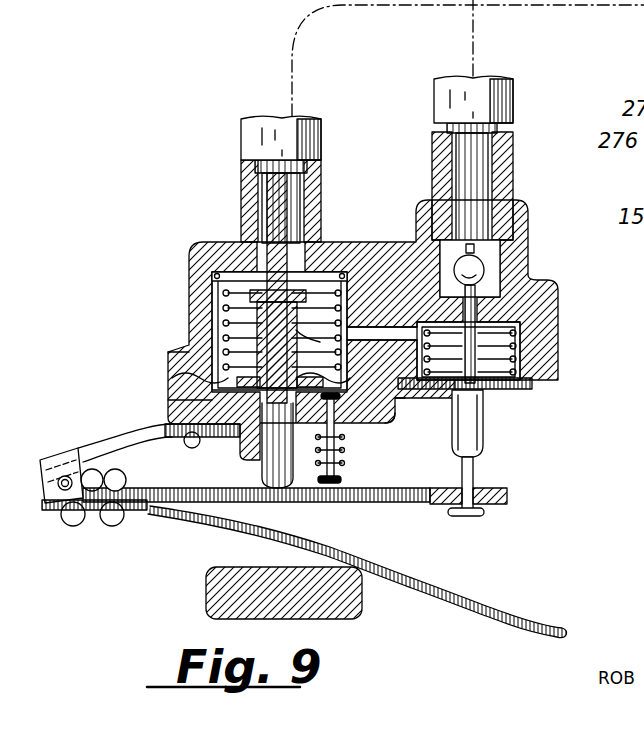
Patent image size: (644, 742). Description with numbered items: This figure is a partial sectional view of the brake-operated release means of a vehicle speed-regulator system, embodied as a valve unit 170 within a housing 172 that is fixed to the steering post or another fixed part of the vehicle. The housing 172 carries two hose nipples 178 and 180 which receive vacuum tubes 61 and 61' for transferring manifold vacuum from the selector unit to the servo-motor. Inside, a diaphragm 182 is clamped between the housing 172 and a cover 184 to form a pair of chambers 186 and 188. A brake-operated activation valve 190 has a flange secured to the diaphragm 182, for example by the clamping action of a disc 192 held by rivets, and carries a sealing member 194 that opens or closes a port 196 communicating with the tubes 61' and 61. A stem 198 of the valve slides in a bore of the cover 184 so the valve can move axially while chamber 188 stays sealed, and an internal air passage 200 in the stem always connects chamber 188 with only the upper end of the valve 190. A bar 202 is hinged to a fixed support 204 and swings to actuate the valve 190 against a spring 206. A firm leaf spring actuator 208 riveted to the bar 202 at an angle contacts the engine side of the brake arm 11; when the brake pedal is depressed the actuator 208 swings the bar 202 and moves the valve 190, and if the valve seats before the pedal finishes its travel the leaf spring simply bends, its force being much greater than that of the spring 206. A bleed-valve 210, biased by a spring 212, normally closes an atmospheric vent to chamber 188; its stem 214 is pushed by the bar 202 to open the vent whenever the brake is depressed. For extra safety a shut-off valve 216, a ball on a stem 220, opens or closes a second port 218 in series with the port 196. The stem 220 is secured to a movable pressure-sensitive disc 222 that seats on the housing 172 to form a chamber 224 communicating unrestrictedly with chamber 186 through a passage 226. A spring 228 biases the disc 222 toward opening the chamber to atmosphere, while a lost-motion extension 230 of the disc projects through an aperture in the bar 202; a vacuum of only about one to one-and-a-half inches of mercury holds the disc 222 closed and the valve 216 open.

The arm 11 is at (240, 578).
The tube 61 is at (252, 134).
The tube 61' is at (502, 97).
The valve unit 170 is at (532, 392).
The housing 172 is at (520, 282).
The hose nipple 178 is at (300, 222).
The hose nipple 180 is at (445, 165).
The diaphragm 182 is at (200, 376).
The cover 184 is at (175, 430).
The chamber 186 is at (332, 272).
The chamber 188 is at (397, 399).
The brake-operated activation valve 190 is at (250, 298).
The disc 192 is at (195, 405).
The sealing member 194 is at (215, 276).
The port 196 is at (310, 258).
The stem 198 is at (270, 477).
The internal air passage 200 is at (323, 346).
The bar 202 is at (398, 500).
The fixed support 204 is at (97, 442).
The spring 206 is at (230, 330).
The leaf spring actuator 208 is at (520, 612).
The bleed-valve 210 is at (392, 419).
The spring 212 is at (342, 455).
The stem 214 is at (318, 492).
The safety shut-off valve 216 is at (485, 262).
The second port 218 is at (490, 308).
The stem 220 is at (484, 410).
The movable disc 222 is at (535, 386).
The chamber 224 is at (520, 337).
The passage 226 is at (382, 330).
The spring 228 is at (525, 362).
The lost-motion extension 230 is at (475, 472).